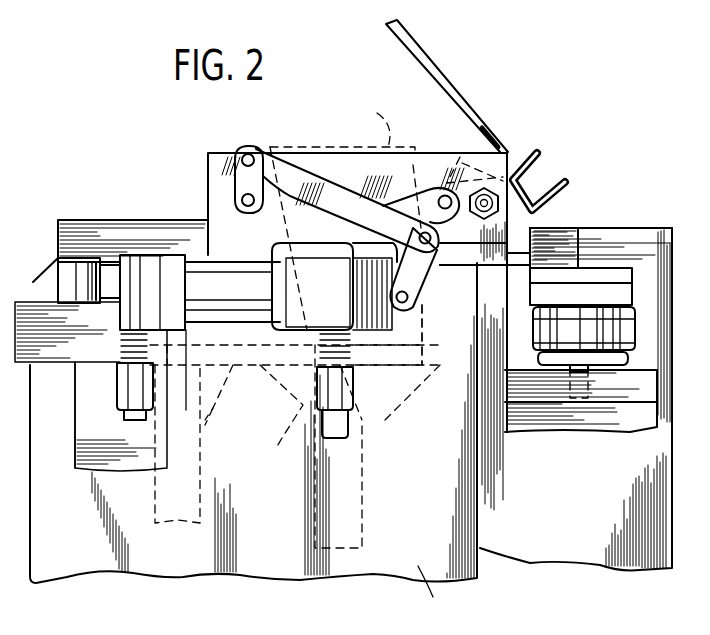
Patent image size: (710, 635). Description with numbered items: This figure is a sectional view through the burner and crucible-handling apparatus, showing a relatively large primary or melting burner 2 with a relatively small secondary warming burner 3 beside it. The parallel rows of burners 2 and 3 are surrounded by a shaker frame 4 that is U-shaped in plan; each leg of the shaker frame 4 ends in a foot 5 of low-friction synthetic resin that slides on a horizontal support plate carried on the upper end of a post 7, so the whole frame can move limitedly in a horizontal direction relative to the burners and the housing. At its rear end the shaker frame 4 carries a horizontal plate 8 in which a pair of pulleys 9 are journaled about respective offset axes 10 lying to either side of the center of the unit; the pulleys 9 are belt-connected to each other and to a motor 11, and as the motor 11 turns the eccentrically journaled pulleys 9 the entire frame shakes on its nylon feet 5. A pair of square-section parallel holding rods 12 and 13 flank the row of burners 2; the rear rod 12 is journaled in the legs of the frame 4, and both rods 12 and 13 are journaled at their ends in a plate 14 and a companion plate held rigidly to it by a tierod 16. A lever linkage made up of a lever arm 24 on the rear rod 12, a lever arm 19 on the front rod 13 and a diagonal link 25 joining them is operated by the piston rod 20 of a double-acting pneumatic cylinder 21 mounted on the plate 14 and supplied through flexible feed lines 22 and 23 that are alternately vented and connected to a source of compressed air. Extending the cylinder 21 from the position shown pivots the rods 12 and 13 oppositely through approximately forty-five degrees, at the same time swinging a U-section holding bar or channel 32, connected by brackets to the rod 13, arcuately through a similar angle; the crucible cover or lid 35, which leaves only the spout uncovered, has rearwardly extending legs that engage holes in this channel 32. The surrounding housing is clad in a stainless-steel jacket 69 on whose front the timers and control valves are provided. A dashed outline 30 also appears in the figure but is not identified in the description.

The primary or melting burner 2 is at (292, 400).
The secondary warming burner 3 is at (210, 408).
The shaker frame 4 is at (116, 238).
The foot 5 is at (76, 275).
The post 7 is at (90, 440).
The horizontal plate 8 is at (606, 277).
The pulley 9 is at (633, 333).
The offset axis 10 is at (632, 295).
The motor 11 is at (632, 425).
The rear holding rod 12 is at (240, 200).
The front holding rod 13 is at (443, 196).
The plate 14 is at (219, 160).
The tierod 16 is at (480, 279).
The lever arm 19 is at (417, 283).
The piston rod 20 is at (390, 312).
The double-acting pneumatic cylinder 21 is at (247, 278).
The flexible feed line 22 is at (118, 375).
The flexible feed line 23 is at (345, 400).
The lever arm 24 is at (238, 182).
The diagonal link 25 is at (310, 180).
The mechanism outline 30 is at (342, 120).
The holding bar 32 is at (534, 157).
The crucible cover 35 is at (475, 120).
The stainless-steel jacket 69 is at (440, 602).